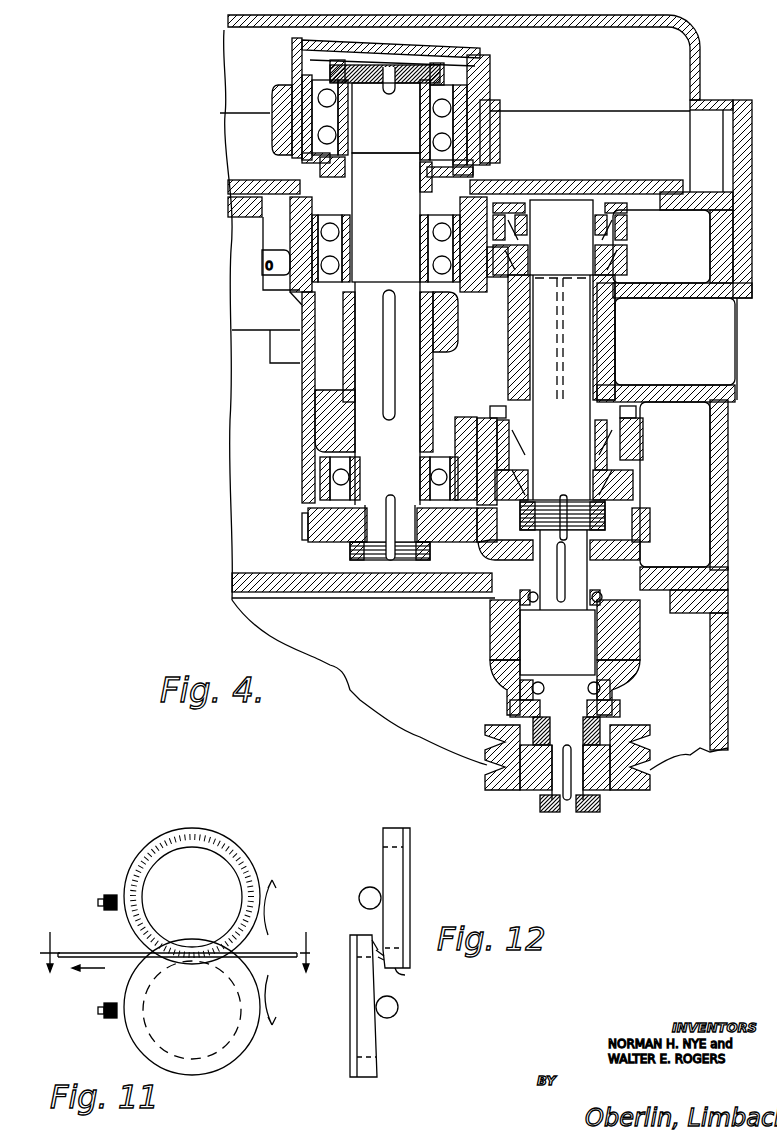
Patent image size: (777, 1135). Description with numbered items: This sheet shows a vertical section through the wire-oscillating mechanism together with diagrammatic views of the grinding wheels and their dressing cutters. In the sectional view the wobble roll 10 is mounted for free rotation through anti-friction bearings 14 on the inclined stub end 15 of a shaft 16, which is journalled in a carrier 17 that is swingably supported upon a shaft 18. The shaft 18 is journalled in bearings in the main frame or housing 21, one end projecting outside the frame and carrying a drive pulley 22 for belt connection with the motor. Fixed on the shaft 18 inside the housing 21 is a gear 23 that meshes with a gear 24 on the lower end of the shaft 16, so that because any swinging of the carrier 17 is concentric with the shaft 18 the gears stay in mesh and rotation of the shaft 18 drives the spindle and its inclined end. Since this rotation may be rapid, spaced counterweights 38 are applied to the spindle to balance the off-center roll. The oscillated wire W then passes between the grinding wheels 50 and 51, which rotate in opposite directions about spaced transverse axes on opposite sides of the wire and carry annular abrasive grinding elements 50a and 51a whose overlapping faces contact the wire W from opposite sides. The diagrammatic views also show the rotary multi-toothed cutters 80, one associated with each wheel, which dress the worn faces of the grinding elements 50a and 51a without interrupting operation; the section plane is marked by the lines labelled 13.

In FIG. 4, the roll 10 is at (272, 125).
In FIG. 4, the anti-friction bearings 14 is at (300, 72).
In FIG. 4, the inclined stub end 15 is at (442, 80).
In FIG. 4, the shaft 16 is at (356, 353).
In FIG. 4, the carrier 17 is at (302, 410).
In FIG. 4, the shaft 18 is at (598, 350).
In FIG. 4, the main frame or housing 21 is at (366, 596).
In FIG. 4, the drive pulley 22 is at (640, 771).
In FIG. 4, the gear 23 is at (650, 524).
In FIG. 4, the gear 24 is at (302, 525).
In FIG. 4, the counterweights 38 is at (438, 344).
In FIG. 11, the grinding wheel 50 is at (192, 896).
In FIG. 12, the grinding wheel 50 is at (410, 888).
In FIG. 11, the grinding element 50a is at (238, 862).
In FIG. 12, the grinding element 50a is at (400, 972).
In FIG. 11, the grinding wheel 51 is at (192, 1007).
In FIG. 12, the grinding wheel 51 is at (350, 975).
In FIG. 11, the grinding element 51a is at (240, 1032).
In FIG. 12, the grinding element 51a is at (362, 940).
In FIG. 11, the rotary multi-toothed cutters 80 is at (105, 896).
In FIG. 12, the rotary multi-toothed cutters 80 is at (363, 890).
In FIG. 11, the section line 13 is at (177, 943).
In FIG. 11, the wire W is at (82, 952).
In FIG. 12, the wire W is at (376, 950).